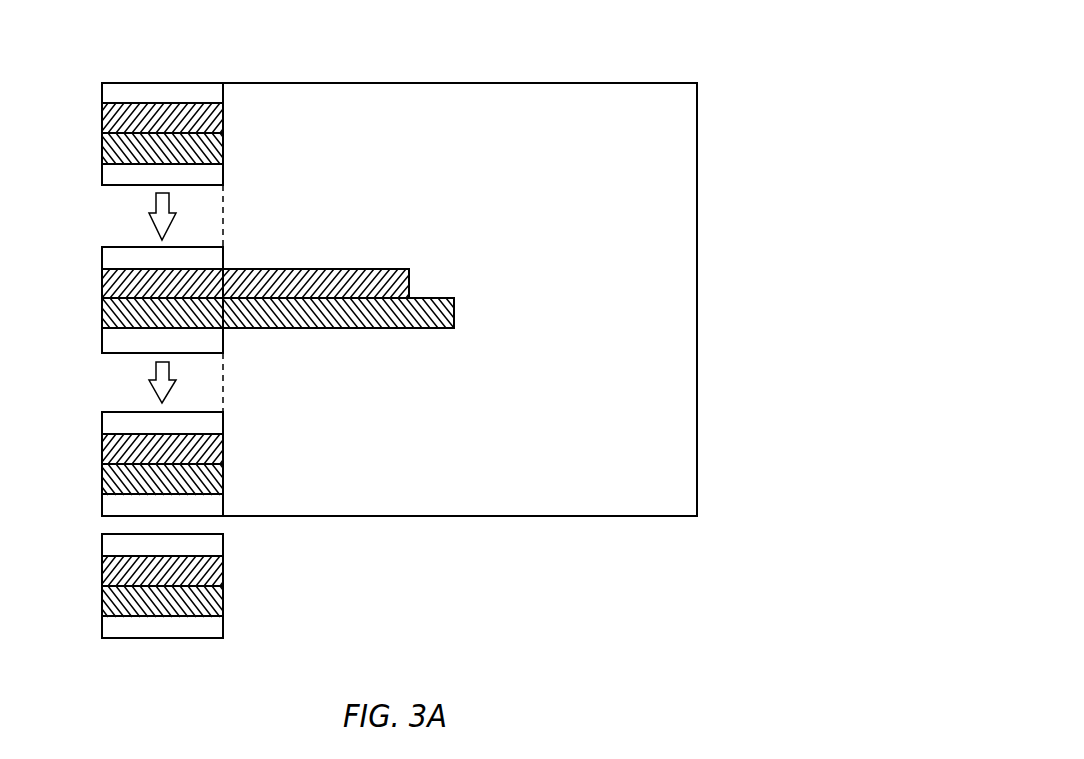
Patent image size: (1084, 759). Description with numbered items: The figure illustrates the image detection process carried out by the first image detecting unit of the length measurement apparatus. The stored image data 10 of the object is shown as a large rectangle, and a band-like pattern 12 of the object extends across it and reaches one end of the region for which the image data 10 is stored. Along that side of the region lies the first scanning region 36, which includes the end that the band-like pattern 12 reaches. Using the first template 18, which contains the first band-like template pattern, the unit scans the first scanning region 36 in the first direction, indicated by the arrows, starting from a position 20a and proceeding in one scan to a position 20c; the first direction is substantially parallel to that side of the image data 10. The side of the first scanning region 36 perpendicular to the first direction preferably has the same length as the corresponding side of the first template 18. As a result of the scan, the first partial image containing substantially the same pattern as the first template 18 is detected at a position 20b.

The image data 10 is at (697, 300).
The band-like pattern 12 is at (313, 266).
The first template 18 is at (222, 538).
The position 20a is at (163, 92).
The position 20b is at (101, 258).
The position 20c is at (101, 419).
The first scanning region 36 is at (212, 385).